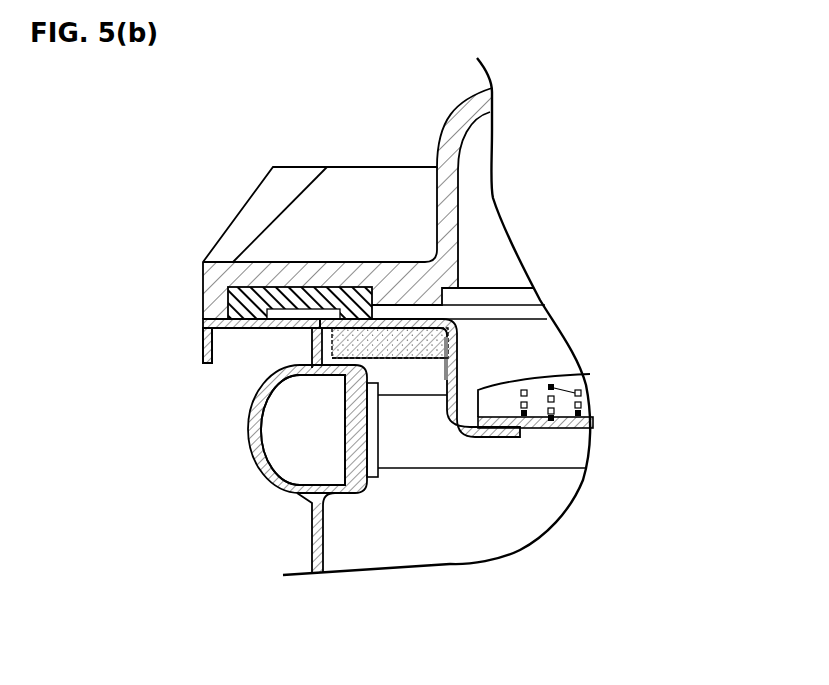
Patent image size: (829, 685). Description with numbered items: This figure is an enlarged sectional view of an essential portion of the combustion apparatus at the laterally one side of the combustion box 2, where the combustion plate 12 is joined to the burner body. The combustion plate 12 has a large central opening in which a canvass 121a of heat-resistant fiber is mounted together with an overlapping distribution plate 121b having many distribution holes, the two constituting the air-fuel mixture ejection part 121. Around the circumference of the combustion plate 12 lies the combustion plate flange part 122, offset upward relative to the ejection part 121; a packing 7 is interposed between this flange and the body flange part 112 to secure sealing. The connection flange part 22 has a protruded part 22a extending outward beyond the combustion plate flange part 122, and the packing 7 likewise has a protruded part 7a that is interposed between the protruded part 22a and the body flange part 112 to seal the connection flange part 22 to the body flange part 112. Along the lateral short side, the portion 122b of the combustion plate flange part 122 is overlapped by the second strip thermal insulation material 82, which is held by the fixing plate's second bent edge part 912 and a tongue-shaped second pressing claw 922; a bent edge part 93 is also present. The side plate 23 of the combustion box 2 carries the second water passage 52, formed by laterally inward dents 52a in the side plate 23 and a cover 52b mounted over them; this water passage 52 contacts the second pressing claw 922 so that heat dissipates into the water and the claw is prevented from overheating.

The combustion box 2 is at (303, 519).
The packing 7 is at (287, 287).
The body flange part 112 is at (258, 265).
The protruded part 7a is at (237, 287).
The portion of the combustion plate flange part 122b is at (340, 309).
The combustion plate flange part 122 is at (420, 353).
The bent edge part 93 is at (451, 323).
The connection flange part 22 is at (283, 331).
The protruded part 22a is at (222, 335).
The combustion plate 12 is at (475, 437).
The second pressing claw 922 is at (392, 360).
The second strip thermal insulation material 82 is at (427, 360).
The second bent edge part 912 is at (320, 348).
The second water passage 52 is at (312, 464).
The cover 52b is at (248, 425).
The dent 52a is at (370, 458).
The side plate 23 is at (310, 545).
The ejection part 121 is at (557, 459).
The canvass 121a is at (506, 437).
The distribution plate 121b is at (592, 446).